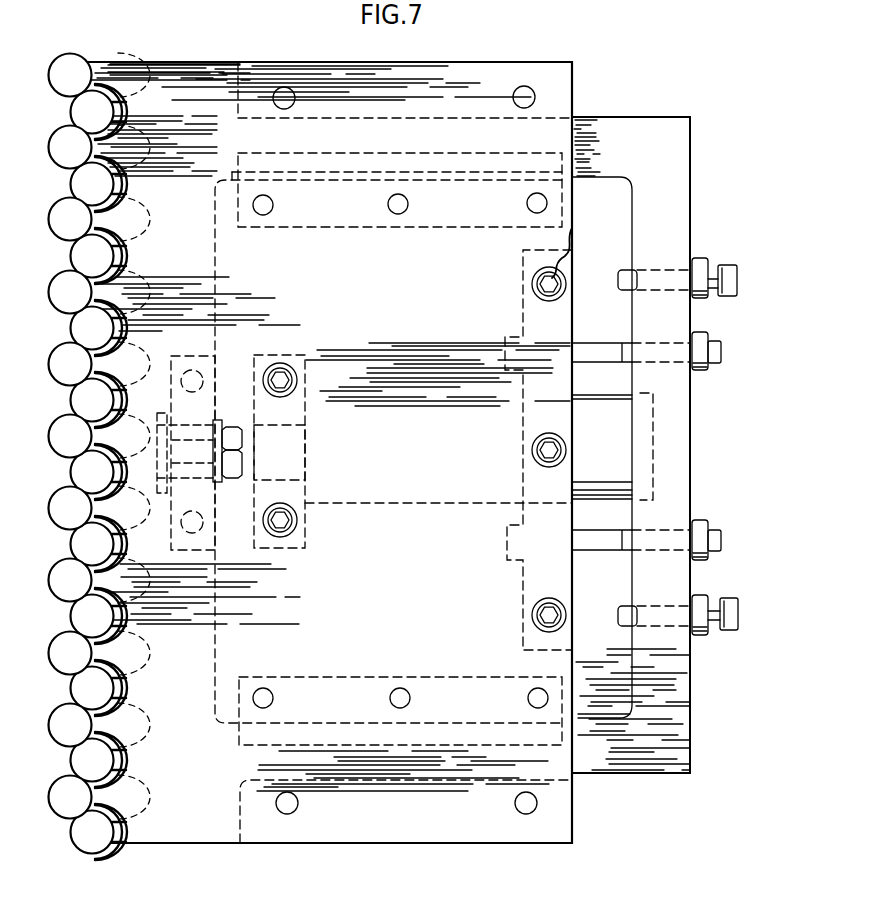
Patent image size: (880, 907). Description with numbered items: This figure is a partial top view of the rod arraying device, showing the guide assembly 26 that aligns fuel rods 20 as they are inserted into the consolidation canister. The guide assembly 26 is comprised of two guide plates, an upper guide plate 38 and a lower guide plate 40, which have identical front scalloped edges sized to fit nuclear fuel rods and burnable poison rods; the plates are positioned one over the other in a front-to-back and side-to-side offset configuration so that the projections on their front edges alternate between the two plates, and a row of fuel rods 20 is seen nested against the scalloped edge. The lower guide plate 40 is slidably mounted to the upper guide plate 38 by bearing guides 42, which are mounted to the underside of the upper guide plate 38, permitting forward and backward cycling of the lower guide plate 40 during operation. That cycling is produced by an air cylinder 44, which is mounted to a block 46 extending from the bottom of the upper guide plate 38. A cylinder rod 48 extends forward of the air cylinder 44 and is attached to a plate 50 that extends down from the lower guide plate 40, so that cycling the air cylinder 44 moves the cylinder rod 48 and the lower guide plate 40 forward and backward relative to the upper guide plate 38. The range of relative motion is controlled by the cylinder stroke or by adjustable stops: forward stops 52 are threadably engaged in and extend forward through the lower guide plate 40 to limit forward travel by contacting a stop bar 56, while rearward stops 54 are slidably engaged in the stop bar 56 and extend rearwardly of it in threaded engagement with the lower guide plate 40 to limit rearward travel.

The fuel rods 20 is at (62, 650).
The guide assembly 26 is at (598, 68).
The upper guide plate 38 is at (216, 61).
The lower guide plate 40 is at (636, 117).
The bearing guides 42 is at (440, 230).
The air cylinder 44 is at (588, 437).
The block 46 is at (300, 355).
The cylinder rod 48 is at (247, 418).
The plate 50 is at (196, 552).
The forward stops 52 is at (727, 266).
The rearward stops 54 is at (698, 370).
The stop bar 56 is at (520, 297).